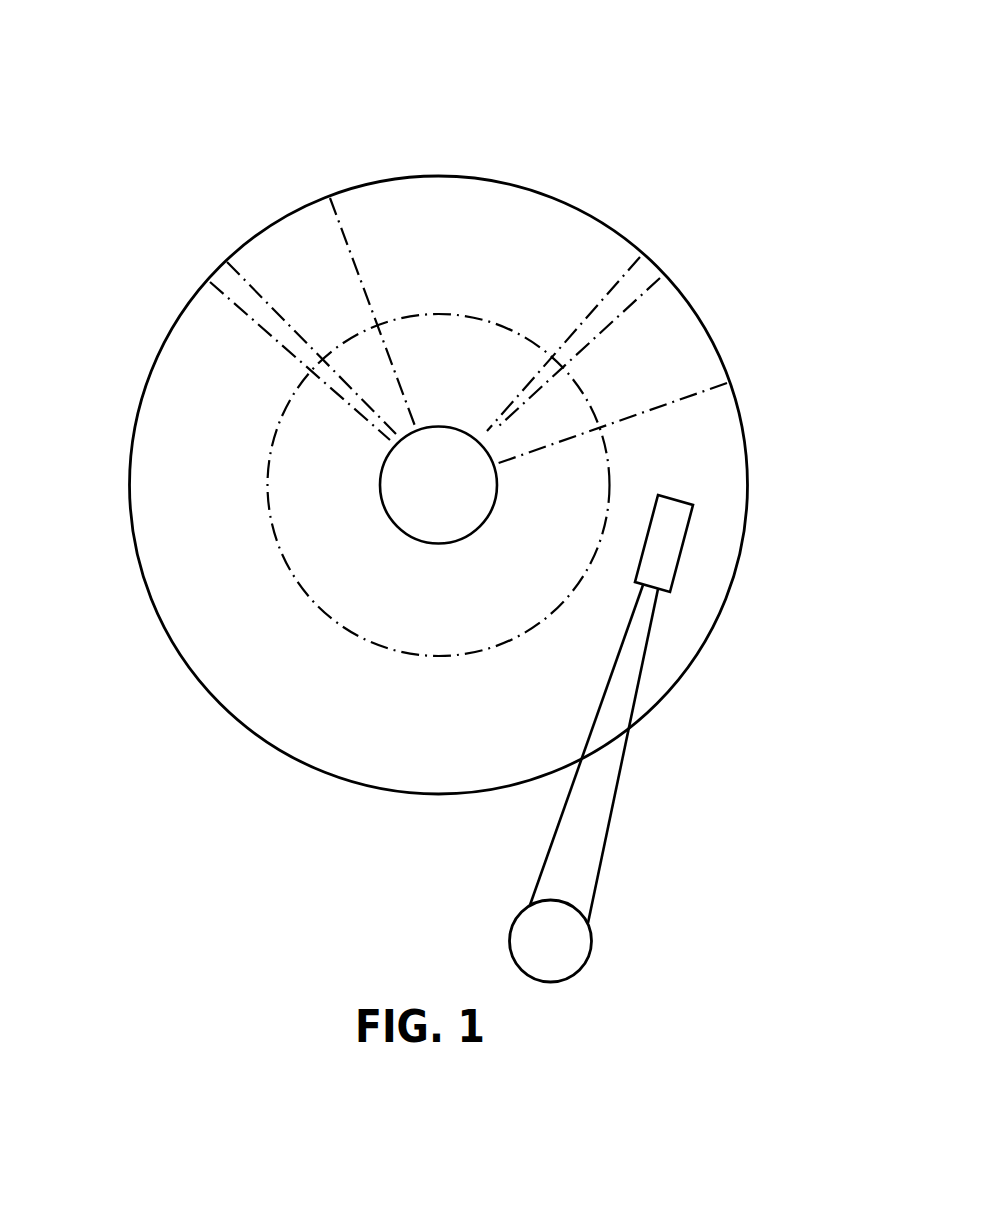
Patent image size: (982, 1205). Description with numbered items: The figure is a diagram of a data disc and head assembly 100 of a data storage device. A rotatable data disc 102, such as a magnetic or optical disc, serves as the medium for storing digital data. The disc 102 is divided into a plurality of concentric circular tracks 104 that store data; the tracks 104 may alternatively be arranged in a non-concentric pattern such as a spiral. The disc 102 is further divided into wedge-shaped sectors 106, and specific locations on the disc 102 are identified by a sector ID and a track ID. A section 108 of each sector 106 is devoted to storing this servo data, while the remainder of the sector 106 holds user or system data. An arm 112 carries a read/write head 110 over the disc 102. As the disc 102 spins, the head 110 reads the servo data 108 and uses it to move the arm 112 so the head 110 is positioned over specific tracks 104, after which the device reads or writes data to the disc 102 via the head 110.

The data disc and head assembly 100 is at (367, 78).
The data disc 102 is at (178, 400).
The tracks 104 is at (303, 595).
The sectors 106 is at (313, 222).
The servo data section 108 is at (218, 292).
The read/write head 110 is at (670, 520).
The arm 112 is at (582, 846).